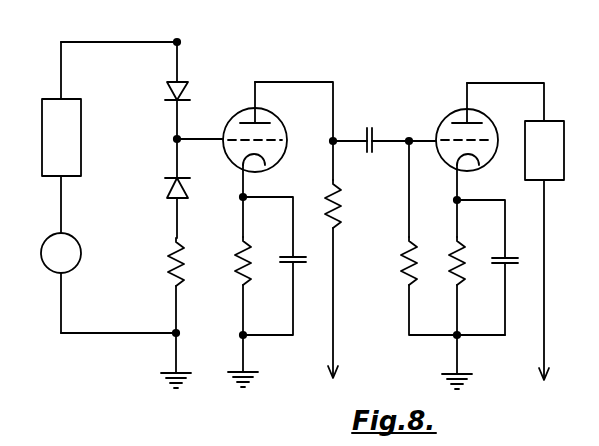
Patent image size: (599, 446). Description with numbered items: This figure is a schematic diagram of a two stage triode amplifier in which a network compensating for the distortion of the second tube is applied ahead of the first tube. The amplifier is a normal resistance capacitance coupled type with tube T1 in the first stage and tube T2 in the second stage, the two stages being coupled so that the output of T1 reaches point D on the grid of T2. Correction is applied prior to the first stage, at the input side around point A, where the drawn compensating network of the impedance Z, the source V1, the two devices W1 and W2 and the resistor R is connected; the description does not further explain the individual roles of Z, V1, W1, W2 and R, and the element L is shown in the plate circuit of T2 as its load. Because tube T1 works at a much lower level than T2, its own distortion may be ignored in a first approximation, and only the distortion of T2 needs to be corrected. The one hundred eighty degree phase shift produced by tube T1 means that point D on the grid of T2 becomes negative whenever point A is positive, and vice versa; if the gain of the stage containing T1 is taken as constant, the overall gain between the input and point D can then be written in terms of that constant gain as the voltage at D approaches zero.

The point A is at (181, 34).
The impedance Z is at (61, 137).
The voltage source V1 is at (61, 253).
The diode W1 is at (170, 90).
The diode W2 is at (170, 182).
The resistor R is at (170, 262).
The tube T1 is at (276, 100).
The tube T2 is at (482, 113).
The point D is at (411, 137).
The load L is at (544, 150).